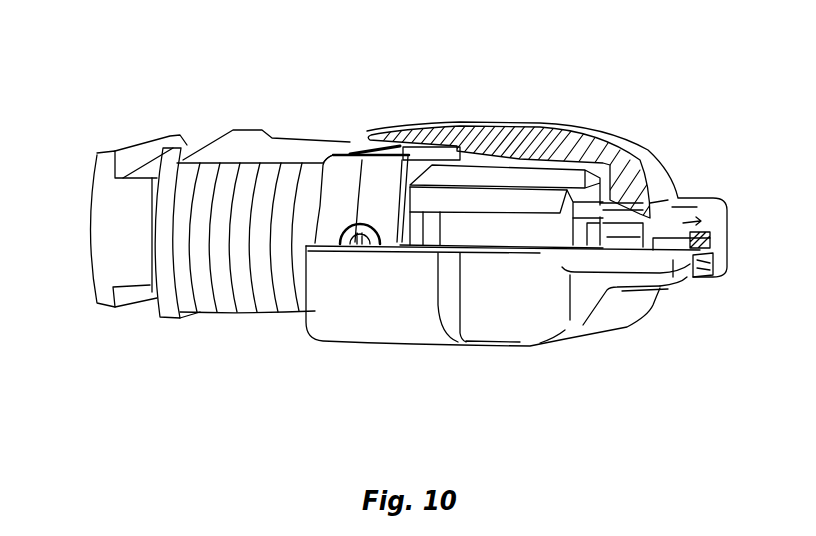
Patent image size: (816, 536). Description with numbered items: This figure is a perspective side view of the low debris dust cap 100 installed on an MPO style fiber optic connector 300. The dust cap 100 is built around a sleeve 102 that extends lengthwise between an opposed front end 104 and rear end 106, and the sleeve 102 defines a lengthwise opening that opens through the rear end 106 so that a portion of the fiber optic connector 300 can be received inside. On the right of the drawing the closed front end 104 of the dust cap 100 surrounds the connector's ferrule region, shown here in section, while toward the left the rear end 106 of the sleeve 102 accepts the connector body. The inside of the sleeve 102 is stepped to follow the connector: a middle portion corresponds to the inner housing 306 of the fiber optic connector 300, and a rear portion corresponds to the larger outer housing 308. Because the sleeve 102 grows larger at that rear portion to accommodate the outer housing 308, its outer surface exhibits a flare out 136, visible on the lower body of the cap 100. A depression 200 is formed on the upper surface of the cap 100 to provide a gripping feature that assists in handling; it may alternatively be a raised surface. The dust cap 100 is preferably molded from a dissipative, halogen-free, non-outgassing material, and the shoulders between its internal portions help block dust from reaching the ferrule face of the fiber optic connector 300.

The low debris dust cap 100 is at (658, 121).
The sleeve 102 is at (629, 328).
The front end 104 is at (728, 233).
The rear end 106 is at (306, 352).
The flare out 136 is at (385, 333).
The depression 200 is at (521, 137).
The fiber optic connector 300 is at (327, 97).
The inner housing 306 is at (100, 235).
The outer housing 308 is at (176, 321).